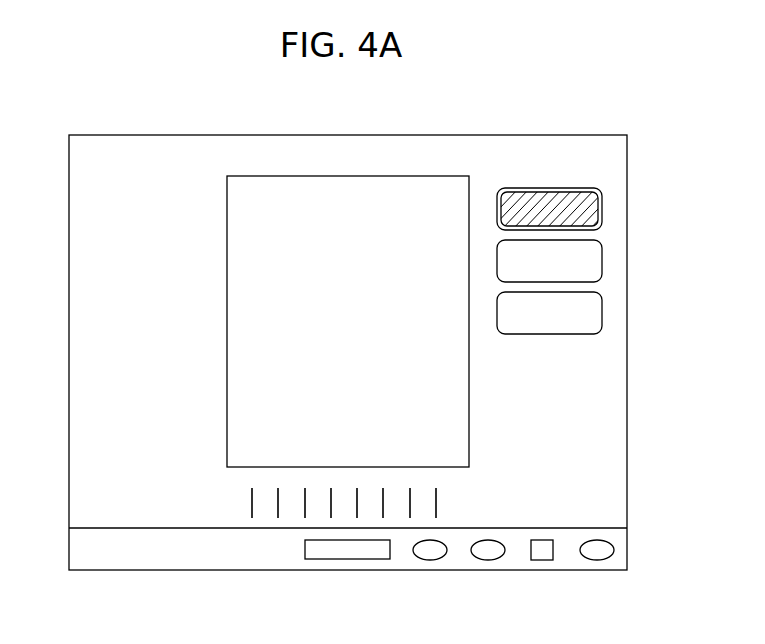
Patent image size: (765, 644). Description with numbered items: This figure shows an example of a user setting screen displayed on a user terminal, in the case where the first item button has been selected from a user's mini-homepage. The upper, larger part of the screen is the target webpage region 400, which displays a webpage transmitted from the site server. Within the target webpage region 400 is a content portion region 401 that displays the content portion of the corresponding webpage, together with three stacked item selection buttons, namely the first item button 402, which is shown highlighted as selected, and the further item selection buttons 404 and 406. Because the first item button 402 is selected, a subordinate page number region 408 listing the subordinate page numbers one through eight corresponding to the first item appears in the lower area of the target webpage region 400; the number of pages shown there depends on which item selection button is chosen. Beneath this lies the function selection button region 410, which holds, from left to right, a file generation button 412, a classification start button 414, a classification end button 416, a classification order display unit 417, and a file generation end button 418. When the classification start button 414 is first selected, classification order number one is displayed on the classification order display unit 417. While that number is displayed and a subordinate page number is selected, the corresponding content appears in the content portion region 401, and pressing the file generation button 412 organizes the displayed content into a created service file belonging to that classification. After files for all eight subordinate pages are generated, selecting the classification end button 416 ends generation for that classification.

The target webpage region 400 is at (600, 400).
The content portion region 401 is at (469, 430).
The item-1 button 402 is at (602, 210).
The item selection button 404 is at (602, 262).
The item selection button 406 is at (602, 314).
The subordinate page number region 408 is at (442, 505).
The function selection button region 410 is at (627, 548).
The file generation button 412 is at (352, 560).
The classification start button 414 is at (430, 560).
The classification end button 416 is at (488, 560).
The classification order display unit 417 is at (543, 560).
The file generation end button 418 is at (597, 560).